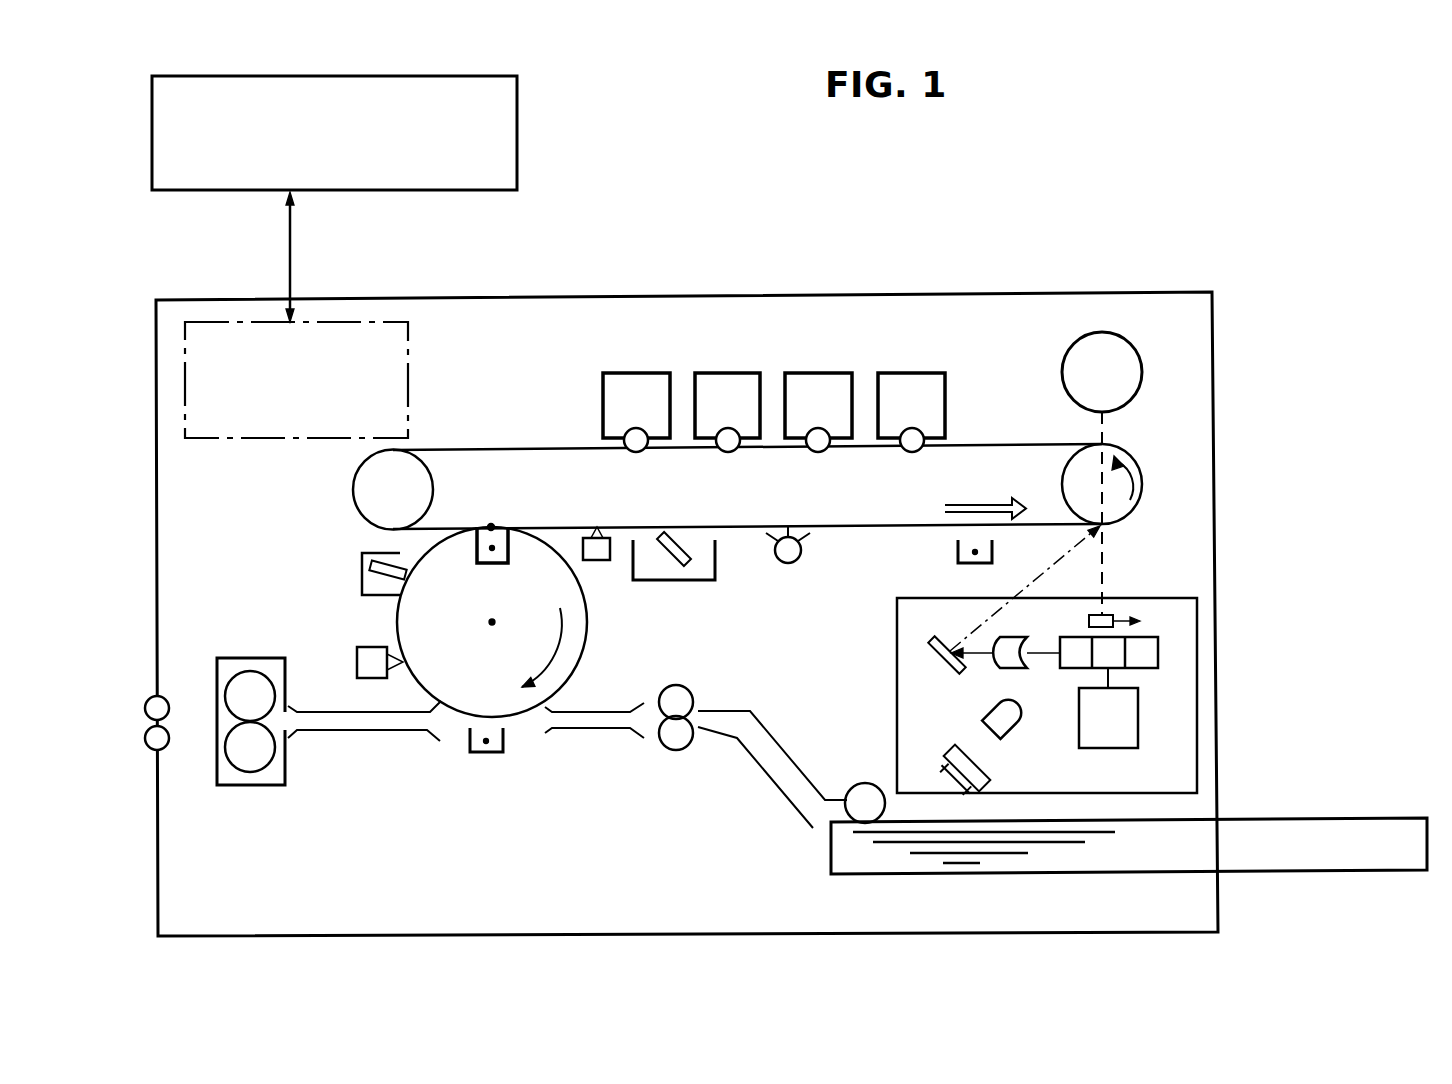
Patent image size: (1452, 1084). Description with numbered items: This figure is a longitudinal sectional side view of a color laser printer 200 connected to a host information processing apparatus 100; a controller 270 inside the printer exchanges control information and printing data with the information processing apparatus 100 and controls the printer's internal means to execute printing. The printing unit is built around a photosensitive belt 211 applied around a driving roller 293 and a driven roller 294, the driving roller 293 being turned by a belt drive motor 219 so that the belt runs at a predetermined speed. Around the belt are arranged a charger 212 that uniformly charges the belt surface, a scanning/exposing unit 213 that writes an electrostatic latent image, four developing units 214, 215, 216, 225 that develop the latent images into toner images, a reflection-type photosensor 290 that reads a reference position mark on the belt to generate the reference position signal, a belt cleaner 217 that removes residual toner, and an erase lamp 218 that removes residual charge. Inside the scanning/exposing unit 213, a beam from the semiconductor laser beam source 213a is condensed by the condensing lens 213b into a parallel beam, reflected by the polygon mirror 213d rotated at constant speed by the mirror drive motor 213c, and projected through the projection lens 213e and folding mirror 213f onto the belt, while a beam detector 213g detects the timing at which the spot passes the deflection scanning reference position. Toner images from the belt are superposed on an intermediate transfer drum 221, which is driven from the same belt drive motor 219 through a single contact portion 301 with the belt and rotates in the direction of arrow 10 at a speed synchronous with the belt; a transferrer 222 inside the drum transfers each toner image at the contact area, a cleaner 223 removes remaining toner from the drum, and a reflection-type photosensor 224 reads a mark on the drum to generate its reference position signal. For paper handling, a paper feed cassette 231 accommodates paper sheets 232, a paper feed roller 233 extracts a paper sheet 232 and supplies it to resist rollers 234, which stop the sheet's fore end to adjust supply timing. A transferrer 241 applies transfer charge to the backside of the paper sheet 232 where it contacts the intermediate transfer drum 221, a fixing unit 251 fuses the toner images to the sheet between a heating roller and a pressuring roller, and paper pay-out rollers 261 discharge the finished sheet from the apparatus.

The information processing apparatus 100 is at (517, 172).
The color laser printer 200 is at (1147, 292).
The controller 270 is at (210, 322).
The photosensitive belt 211 is at (580, 448).
The developing unit 214 is at (913, 373).
The developing unit 215 is at (820, 373).
The developing unit 216 is at (730, 373).
The developing unit 225 is at (638, 373).
The belt drive motor 219 is at (1142, 372).
The driving roller 293 is at (1142, 486).
The driven roller 294 is at (353, 485).
The intermediate transfer drum 221 is at (586, 640).
The arrow 10 is at (548, 662).
The contact portion 301 is at (491, 527).
The transferrer 222 is at (505, 535).
The cleaner 223 is at (353, 569).
The photosensor 224 is at (357, 660).
The photosensor 290 is at (597, 560).
The belt cleaner 217 is at (690, 580).
The erase lamp 218 is at (793, 563).
The charger 212 is at (957, 553).
The scanning/exposing unit 213 is at (1197, 682).
The semiconductor laser beam source 213a is at (952, 748).
The condensing lens 213b is at (1016, 735).
The mirror drive motor 213c is at (1100, 750).
The polygon mirror 213d is at (1143, 670).
The projection lens 213e is at (1000, 640).
The folding mirror 213f is at (930, 643).
The beam detector 213g is at (1113, 615).
The paper pay-out rollers 261 is at (150, 700).
The fixing unit 251 is at (237, 786).
The transferrer 241 is at (481, 753).
The resist rollers 234 is at (676, 750).
The paper feed roller 233 is at (862, 784).
The paper sheet 232 is at (992, 873).
The paper feed cassette 231 is at (1322, 872).